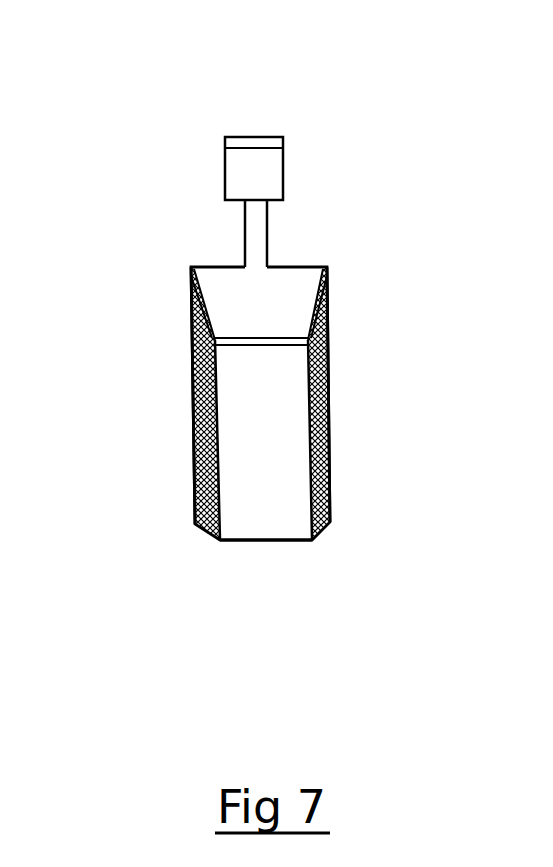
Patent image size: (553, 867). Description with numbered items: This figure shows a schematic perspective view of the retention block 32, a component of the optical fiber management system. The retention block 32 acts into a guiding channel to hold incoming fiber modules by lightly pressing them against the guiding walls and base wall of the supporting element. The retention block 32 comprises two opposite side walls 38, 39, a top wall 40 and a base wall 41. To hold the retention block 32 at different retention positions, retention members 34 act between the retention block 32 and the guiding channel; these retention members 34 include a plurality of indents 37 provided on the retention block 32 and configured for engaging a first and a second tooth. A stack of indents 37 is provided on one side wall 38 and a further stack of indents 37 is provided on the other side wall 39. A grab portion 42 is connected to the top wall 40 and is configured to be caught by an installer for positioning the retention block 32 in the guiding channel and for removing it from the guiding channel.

The retention block 32 is at (317, 240).
The retention members 34 is at (195, 435).
The indents 37 is at (193, 322).
The side wall 38 is at (193, 385).
The side wall 39 is at (328, 395).
The top wall 40 is at (242, 300).
The base wall 41 is at (262, 540).
The grab portion 42 is at (268, 152).